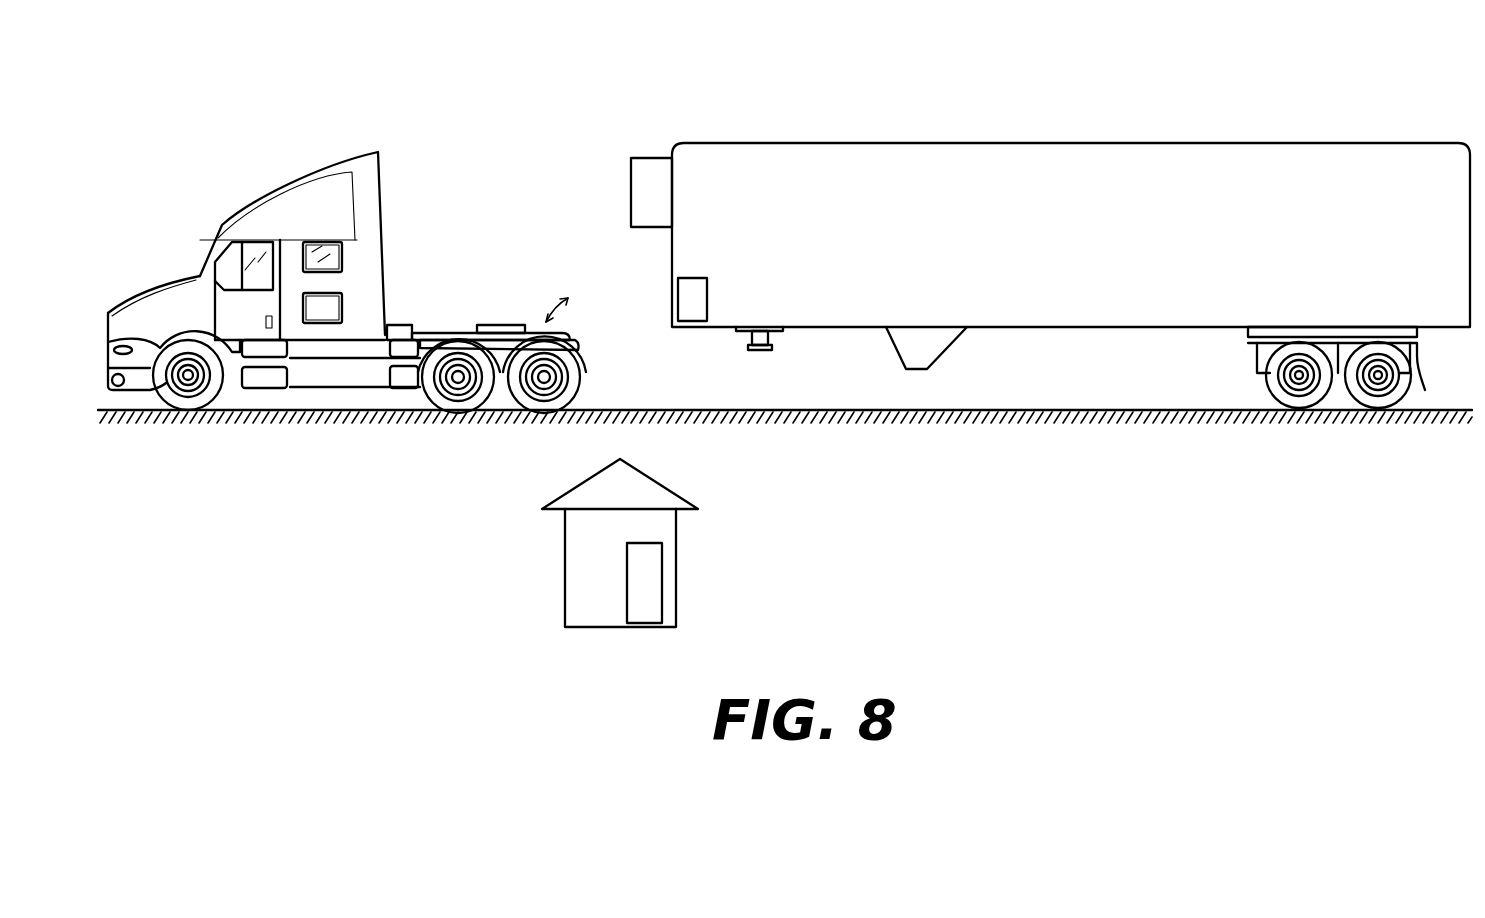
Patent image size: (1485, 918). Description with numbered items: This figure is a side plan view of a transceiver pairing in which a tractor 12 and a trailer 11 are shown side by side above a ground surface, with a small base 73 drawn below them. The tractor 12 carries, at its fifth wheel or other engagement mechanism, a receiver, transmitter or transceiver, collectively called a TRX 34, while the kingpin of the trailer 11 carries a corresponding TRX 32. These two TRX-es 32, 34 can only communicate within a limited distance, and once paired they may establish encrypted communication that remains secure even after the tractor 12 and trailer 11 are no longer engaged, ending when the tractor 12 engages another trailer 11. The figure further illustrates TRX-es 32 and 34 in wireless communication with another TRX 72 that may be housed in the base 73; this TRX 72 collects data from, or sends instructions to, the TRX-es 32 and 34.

The trailer 11 is at (1380, 152).
The tractor 12 is at (158, 287).
The transceiver (TRX) carried by the kingpin 32 is at (693, 311).
The transceiver (TRX) carried by the fifth wheel 34 is at (405, 325).
The transceiver (TRX) 72 is at (657, 573).
The base 73 is at (595, 481).